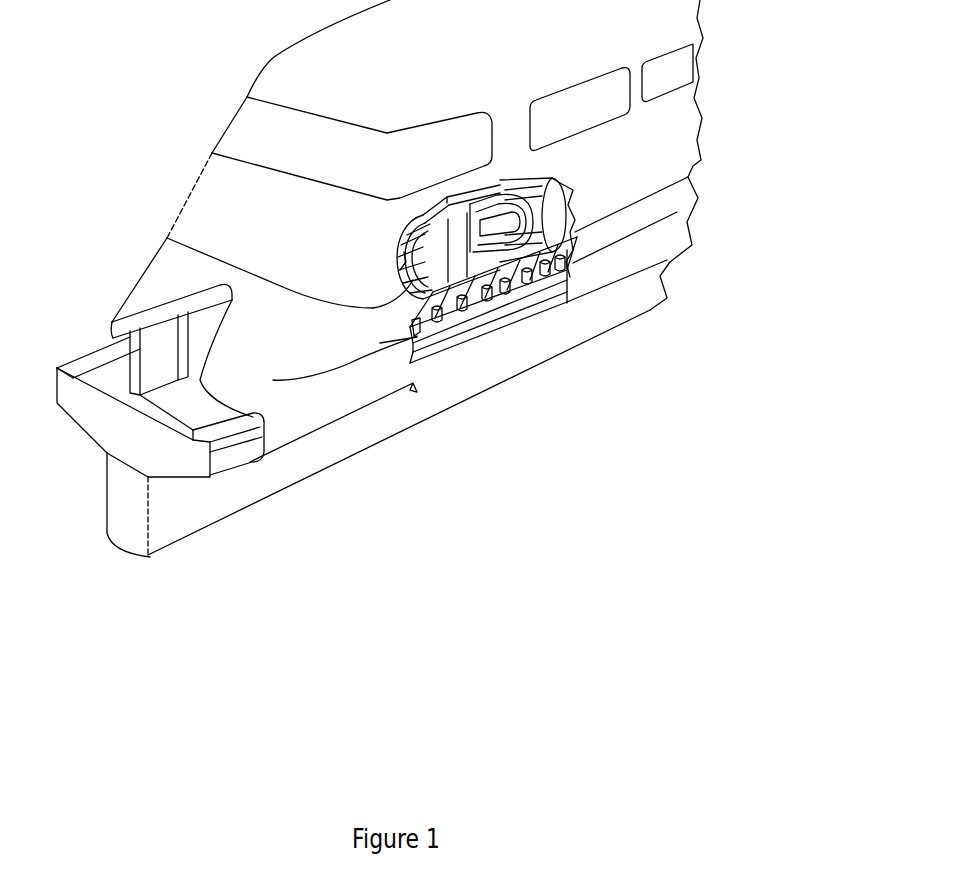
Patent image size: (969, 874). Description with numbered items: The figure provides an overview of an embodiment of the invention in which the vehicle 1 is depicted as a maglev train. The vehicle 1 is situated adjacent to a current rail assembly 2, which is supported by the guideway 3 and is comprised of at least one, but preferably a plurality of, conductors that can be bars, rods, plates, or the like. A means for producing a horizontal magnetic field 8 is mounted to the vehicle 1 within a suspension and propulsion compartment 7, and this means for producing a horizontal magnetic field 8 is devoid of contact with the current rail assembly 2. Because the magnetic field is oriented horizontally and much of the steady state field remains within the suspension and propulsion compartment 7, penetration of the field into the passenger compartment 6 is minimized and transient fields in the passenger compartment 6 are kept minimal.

The vehicle 1 is at (788, 152).
The current rail assembly 2 is at (158, 357).
The guideway 3 is at (140, 452).
The passenger compartment 6 is at (642, 137).
The suspension and propulsion compartment 7 is at (652, 243).
The means for producing a horizontal magnetic field 8 is at (430, 290).